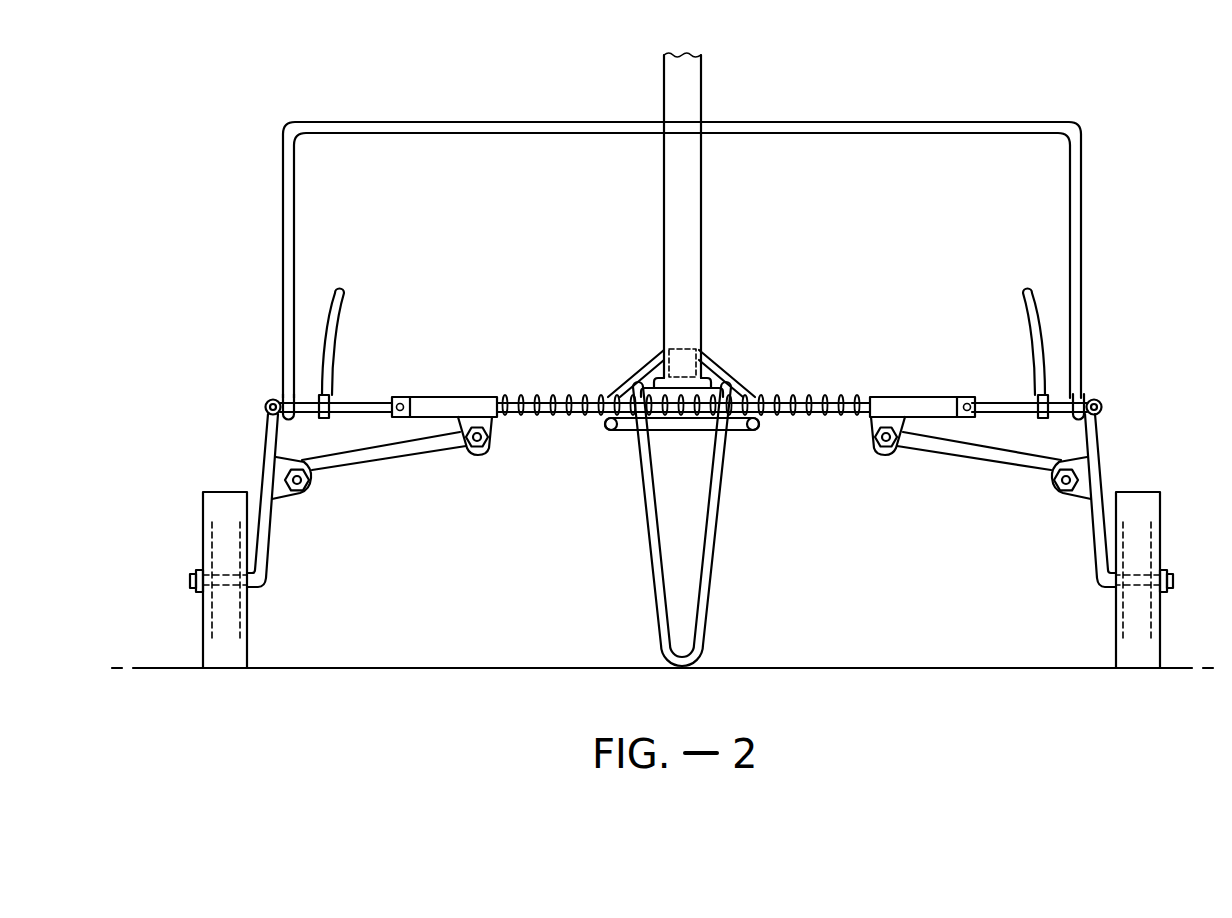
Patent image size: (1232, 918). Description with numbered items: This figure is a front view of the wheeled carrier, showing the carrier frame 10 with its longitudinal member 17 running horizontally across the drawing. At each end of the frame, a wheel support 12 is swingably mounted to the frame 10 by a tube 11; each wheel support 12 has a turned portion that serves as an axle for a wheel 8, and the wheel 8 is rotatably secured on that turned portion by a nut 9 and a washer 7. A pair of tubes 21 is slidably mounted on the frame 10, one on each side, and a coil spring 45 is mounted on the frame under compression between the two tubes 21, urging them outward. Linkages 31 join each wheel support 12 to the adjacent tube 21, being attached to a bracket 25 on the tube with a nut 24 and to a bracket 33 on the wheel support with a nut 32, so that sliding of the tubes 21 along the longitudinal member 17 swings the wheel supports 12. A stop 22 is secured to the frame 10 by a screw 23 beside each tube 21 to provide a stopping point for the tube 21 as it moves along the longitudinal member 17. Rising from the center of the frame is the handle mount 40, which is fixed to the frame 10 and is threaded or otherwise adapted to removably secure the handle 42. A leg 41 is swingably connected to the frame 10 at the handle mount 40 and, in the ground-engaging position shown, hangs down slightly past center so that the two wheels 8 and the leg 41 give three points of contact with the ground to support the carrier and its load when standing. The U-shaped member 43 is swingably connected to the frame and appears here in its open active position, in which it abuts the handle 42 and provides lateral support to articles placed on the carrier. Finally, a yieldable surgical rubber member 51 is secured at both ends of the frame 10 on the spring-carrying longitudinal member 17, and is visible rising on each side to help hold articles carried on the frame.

The washer 7 is at (197, 570).
The wheel 8 is at (222, 496).
The nut 9 is at (196, 580).
The carrier frame 10 is at (361, 390).
The tube 11 is at (265, 403).
The wheel support 12 is at (265, 572).
The longitudinal member 17 is at (310, 402).
The tube 21 is at (447, 397).
The stop 22 is at (399, 396).
The screw 23 is at (396, 412).
The nut 24 is at (480, 450).
The bracket 25 is at (493, 422).
The linkage 31 is at (380, 450).
The nut 32 is at (312, 482).
The bracket 33 is at (283, 500).
The handle mount 40 is at (700, 350).
The leg 41 is at (708, 565).
The handle 42 is at (696, 190).
The U-shaped member 43 is at (286, 198).
The coil spring 45 is at (768, 398).
The yieldable surgical rubber member 51 is at (339, 305).